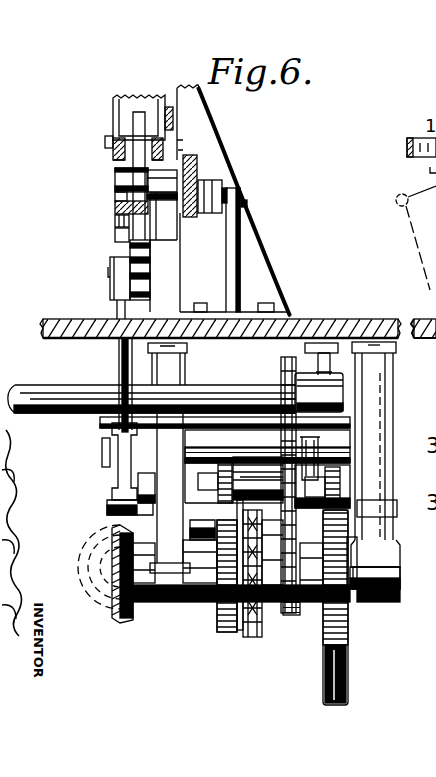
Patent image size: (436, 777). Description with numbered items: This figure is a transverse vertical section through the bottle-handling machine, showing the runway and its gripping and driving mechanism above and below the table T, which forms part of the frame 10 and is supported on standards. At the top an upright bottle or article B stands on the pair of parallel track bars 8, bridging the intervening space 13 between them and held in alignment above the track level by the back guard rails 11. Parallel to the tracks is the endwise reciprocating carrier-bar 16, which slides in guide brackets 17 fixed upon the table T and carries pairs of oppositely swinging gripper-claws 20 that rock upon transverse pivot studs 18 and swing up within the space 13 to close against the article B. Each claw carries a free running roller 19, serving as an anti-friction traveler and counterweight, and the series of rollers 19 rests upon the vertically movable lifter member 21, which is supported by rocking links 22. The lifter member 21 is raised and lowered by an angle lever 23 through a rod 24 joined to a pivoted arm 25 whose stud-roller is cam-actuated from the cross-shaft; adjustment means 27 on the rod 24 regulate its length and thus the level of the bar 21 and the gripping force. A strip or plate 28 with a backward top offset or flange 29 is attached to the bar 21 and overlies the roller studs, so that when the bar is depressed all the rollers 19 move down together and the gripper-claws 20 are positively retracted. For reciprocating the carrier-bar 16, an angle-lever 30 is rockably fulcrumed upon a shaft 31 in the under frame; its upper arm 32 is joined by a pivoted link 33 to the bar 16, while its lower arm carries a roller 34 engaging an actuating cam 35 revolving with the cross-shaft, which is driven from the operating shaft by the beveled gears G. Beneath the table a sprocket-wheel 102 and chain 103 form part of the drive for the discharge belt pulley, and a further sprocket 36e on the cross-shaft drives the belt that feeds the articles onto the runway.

The bottle or article B is at (128, 106).
The gripper-claws 20 is at (139, 124).
The back guard rails 11 is at (175, 114).
The intervening space 13 is at (120, 160).
The track bars 8 is at (118, 157).
The reciprocating bar 16 is at (200, 178).
The link 33 is at (208, 186).
The guides or brackets 17 is at (262, 271).
The upper arm 32 is at (228, 232).
The angle lever 23 is at (188, 252).
The roller 19 is at (160, 196).
The top offset or flange 29 is at (115, 180).
The strip or plate 28 is at (115, 196).
The pivot studs 18 is at (115, 206).
The lifter member 21 is at (118, 220).
The rocking links 22 is at (120, 233).
The table T is at (346, 325).
The frame 10 is at (274, 465).
The rod 24 is at (122, 362).
The chain 103 is at (192, 388).
The angle-lever 30 is at (233, 371).
The adjustment means 27 is at (124, 458).
The pivoted arm 25 is at (240, 480).
The shaft 31 is at (281, 442).
The roller 34 is at (343, 481).
The beveled gears G is at (116, 581).
The sprocket-wheel 102 is at (256, 585).
The sprocket 36e is at (292, 615).
The actuating cam 35 is at (338, 622).